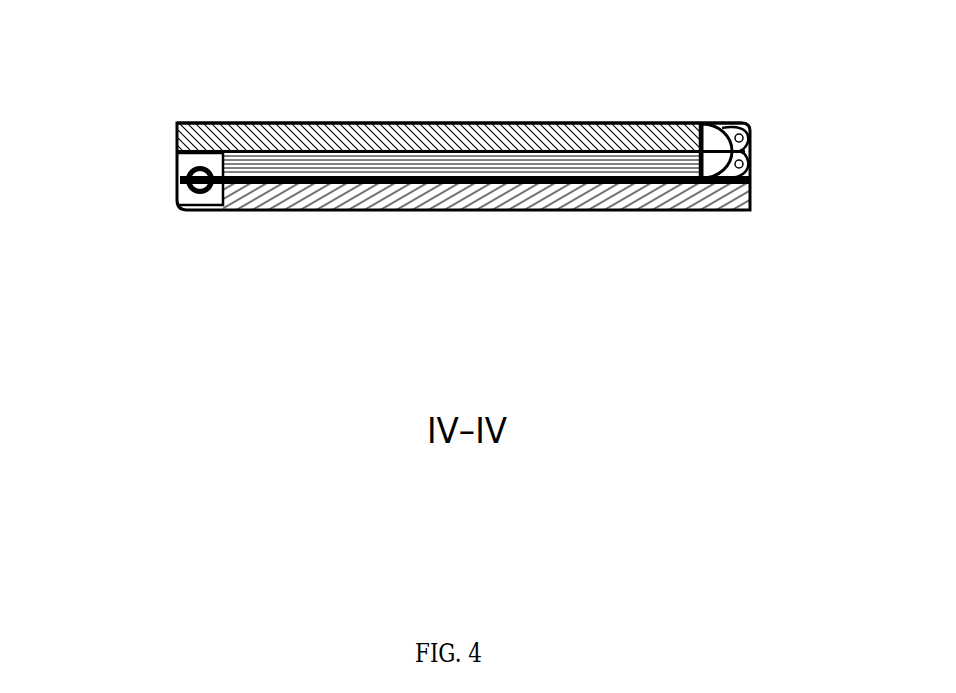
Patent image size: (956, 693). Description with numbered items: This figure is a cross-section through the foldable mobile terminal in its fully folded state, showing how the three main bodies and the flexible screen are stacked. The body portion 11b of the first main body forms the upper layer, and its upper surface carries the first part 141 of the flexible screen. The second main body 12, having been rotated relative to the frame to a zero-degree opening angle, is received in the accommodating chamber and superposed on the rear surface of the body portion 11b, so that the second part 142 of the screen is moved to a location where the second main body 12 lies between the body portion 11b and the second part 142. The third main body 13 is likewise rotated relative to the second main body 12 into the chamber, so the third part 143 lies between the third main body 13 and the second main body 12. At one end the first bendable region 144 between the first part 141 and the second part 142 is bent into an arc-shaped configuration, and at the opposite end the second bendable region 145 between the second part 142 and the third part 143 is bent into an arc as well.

The body portion 11b is at (203, 122).
The second main body 12 is at (313, 162).
The third main body 13 is at (363, 190).
The first part 141 is at (463, 122).
The second part 142 is at (243, 190).
The third part 143 is at (623, 190).
The first bendable region 144 is at (737, 124).
The second bendable region 145 is at (183, 181).